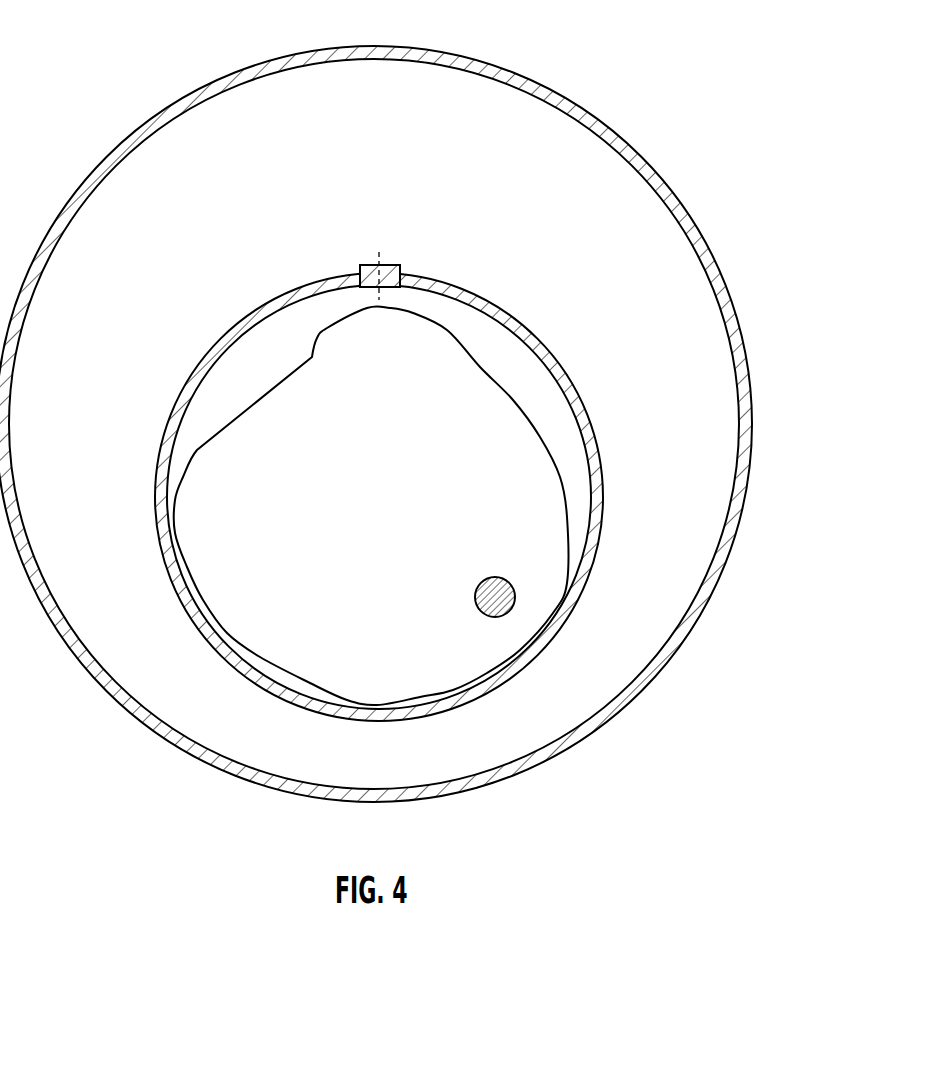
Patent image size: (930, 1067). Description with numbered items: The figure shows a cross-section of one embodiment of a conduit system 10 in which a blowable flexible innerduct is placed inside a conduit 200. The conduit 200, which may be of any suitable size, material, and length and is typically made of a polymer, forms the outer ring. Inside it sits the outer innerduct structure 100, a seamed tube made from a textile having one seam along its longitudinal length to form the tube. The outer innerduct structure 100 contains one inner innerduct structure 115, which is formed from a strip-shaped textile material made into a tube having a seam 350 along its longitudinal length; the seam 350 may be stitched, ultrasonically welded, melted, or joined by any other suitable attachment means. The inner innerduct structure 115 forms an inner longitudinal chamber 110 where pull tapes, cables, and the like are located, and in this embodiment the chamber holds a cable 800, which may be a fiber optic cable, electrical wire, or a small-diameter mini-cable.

The conduit system 10 is at (70, 84).
The conduit 200 is at (525, 75).
The outer innerduct structure 100 is at (598, 427).
The inner longitudinal chamber 110 is at (398, 510).
The inner innerduct structure 115 is at (570, 562).
The seam 350 is at (378, 262).
The cable 800 is at (493, 575).